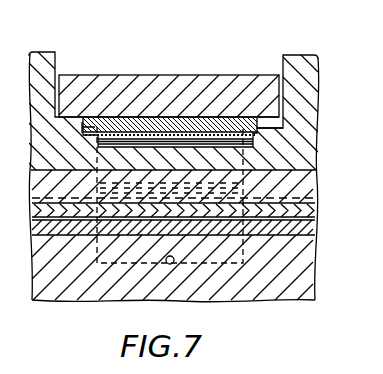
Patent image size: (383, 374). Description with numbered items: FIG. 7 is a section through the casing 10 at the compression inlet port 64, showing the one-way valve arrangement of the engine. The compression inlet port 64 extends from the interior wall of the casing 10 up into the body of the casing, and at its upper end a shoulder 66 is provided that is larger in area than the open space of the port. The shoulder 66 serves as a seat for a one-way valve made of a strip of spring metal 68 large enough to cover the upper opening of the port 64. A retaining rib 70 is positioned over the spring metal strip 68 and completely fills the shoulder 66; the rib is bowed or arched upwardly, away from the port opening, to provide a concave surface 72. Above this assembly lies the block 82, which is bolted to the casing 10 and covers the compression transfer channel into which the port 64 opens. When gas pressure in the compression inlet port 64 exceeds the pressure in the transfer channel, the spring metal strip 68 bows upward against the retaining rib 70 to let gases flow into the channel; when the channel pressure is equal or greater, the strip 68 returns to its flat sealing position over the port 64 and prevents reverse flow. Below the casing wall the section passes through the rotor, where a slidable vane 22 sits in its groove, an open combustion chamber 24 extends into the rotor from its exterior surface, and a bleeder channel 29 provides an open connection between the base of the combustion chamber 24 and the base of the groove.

The casing 10 is at (293, 62).
The block 82 is at (180, 77).
The concave surface 72 is at (145, 117).
The spring metal strip 68 is at (212, 119).
The retaining rib 70 is at (82, 130).
The compression inlet port 64 is at (245, 140).
The shoulder 66 is at (258, 125).
The slidable vane 22 is at (308, 223).
The combustion chamber 24 is at (235, 252).
The bleeder channel 29 is at (163, 264).